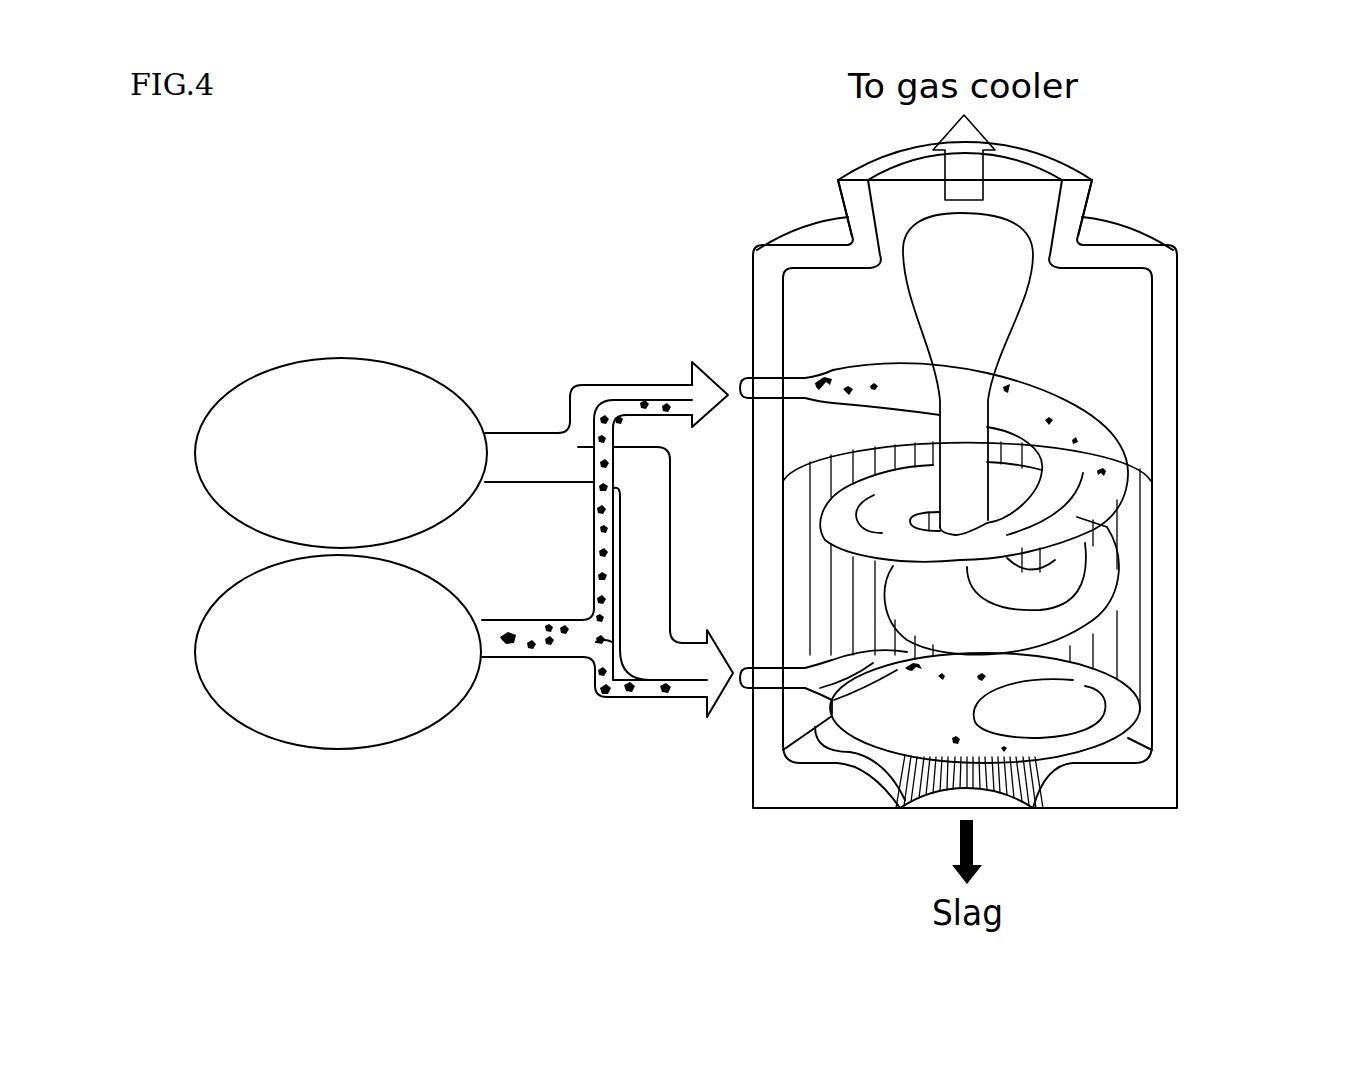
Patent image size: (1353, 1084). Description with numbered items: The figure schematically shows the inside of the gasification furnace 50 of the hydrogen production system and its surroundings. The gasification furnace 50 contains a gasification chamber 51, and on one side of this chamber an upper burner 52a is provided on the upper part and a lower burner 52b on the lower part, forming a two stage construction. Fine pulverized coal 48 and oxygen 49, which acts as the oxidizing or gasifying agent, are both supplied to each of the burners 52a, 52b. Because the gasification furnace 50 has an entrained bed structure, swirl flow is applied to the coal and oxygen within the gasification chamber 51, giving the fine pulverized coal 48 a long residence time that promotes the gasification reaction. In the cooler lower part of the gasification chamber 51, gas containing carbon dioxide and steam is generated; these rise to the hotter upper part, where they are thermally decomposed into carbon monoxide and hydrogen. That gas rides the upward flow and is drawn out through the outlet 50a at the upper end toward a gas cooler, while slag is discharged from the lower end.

The fine pulverized coal 48 is at (340, 752).
The oxygen 49 is at (350, 358).
The gasification furnace 50 is at (1180, 376).
The outlet 50a is at (1046, 178).
The gasification chamber 51 is at (1108, 330).
The upper burner 52a is at (763, 382).
The lower burner 52b is at (765, 688).